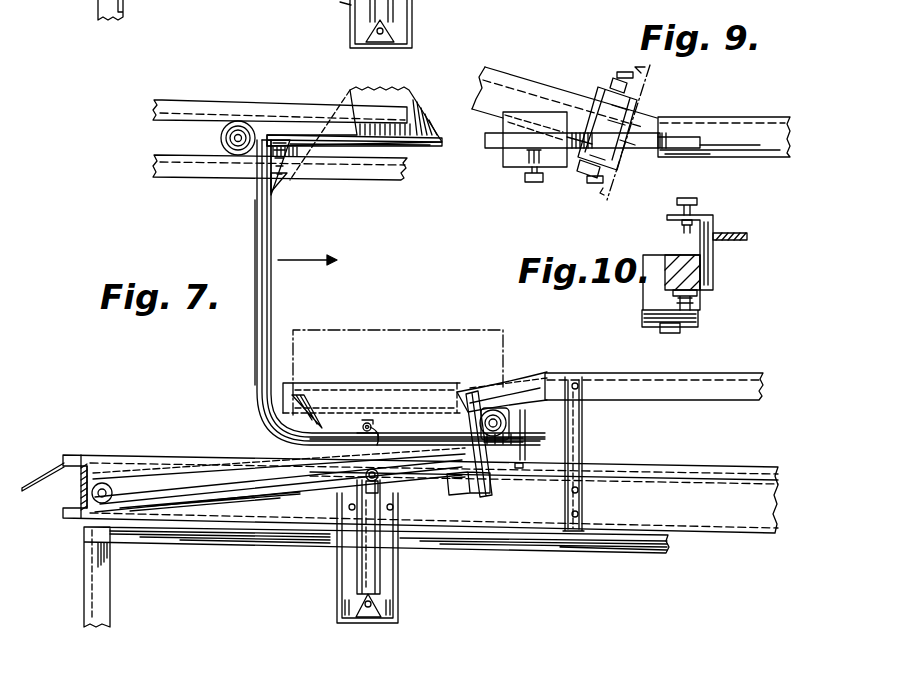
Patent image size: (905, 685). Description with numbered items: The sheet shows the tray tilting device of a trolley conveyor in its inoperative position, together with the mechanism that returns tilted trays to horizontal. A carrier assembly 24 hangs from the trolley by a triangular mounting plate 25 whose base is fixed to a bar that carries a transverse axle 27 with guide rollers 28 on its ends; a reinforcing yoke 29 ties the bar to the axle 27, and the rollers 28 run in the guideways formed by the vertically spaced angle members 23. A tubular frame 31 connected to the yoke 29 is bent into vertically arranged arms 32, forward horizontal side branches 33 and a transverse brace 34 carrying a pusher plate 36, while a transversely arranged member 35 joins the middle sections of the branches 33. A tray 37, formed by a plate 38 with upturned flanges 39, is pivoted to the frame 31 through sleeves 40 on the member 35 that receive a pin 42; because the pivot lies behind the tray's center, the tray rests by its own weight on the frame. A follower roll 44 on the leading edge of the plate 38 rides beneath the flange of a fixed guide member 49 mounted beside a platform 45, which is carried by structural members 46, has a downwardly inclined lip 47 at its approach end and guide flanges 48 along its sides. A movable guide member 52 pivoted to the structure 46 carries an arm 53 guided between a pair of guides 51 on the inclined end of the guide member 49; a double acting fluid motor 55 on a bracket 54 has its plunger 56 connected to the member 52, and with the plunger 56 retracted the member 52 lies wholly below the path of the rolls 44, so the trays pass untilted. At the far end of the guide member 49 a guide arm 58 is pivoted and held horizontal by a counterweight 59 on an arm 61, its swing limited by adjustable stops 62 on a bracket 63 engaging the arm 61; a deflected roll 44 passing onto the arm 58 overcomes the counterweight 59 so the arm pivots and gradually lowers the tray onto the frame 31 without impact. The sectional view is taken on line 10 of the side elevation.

In FIG. 9, the section line 10— 10 is at (639, 140).
In FIG. 7, the angle members 23 is at (230, 102).
In FIG. 7, the carrier assembly 24 is at (285, 228).
In FIG. 7, the triangular mounting plate 25 is at (423, 117).
In FIG. 7, the axle 27 is at (240, 142).
In FIG. 7, the guide rollers 28 is at (222, 135).
In FIG. 7, the reinforcing yoke 29 is at (433, 148).
In FIG. 7, the tubular frame 31 is at (261, 414).
In FIG. 7, the vertically arranged arms 32 is at (272, 302).
In FIG. 7, the side branches 33 is at (407, 437).
In FIG. 7, the transverse brace 34 is at (512, 448).
In FIG. 7, the transversely arranged member 35 is at (363, 437).
In FIG. 7, the pusher plate 36 is at (526, 420).
In FIG. 7, the tray 37 is at (449, 380).
In FIG. 7, the plate 38 is at (338, 412).
In FIG. 7, the upturned flanges 39 is at (388, 384).
In FIG. 7, the sleeves 40 is at (377, 437).
In FIG. 7, the pin 42 is at (363, 427).
In FIG. 7, the follower roll 44 is at (503, 400).
In FIG. 7, the platform 45 is at (175, 465).
In FIG. 7, the structural members 46 is at (102, 588).
In FIG. 7, the downwardly inclined lip 47 is at (30, 489).
In FIG. 7, the guide flanges 48 is at (122, 455).
In FIG. 7, the guide member 49 is at (565, 373).
In FIG. 9, the guide member 49 is at (515, 73).
In FIG. 10, the guide member 49 is at (742, 237).
In FIG. 7, the guides 51 is at (488, 458).
In FIG. 7, the guide member 52 is at (268, 484).
In FIG. 7, the arm 53 is at (457, 494).
In FIG. 7, the supporting bracket 54 is at (339, 570).
In FIG. 7, the fluid motor 55 is at (384, 572).
In FIG. 7, the plunger 56 is at (379, 484).
In FIG. 9, the guide arm 58 is at (735, 118).
In FIG. 9, the counterweight 59 is at (521, 170).
In FIG. 10, the counterweight 59 is at (648, 295).
In FIG. 9, the arm 61 is at (494, 148).
In FIG. 10, the arm 61 is at (675, 262).
In FIG. 9, the adjustable stops 62 is at (617, 130).
In FIG. 10, the adjustable stops 62 is at (698, 200).
In FIG. 9, the bracket 63 is at (597, 93).
In FIG. 10, the bracket 63 is at (712, 222).